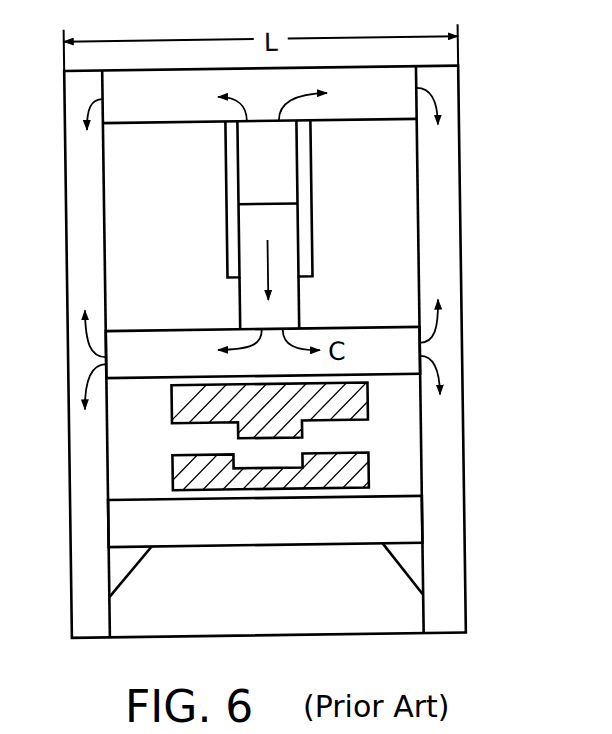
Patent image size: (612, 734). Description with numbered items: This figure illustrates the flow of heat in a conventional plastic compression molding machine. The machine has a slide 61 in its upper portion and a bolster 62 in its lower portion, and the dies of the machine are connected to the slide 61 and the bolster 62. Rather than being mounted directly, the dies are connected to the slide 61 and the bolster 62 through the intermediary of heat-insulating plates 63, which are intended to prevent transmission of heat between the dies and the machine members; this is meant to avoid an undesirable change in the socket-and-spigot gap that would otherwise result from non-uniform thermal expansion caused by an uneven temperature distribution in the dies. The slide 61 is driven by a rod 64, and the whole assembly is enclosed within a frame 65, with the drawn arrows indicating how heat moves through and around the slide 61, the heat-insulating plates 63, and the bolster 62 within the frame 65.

The slide 61 is at (366, 329).
The bolster 62 is at (408, 525).
The heat-insulating plates 63 is at (367, 489).
The piston rod (hydraulic cylinder) 64 is at (314, 184).
The press frame 65 is at (462, 196).